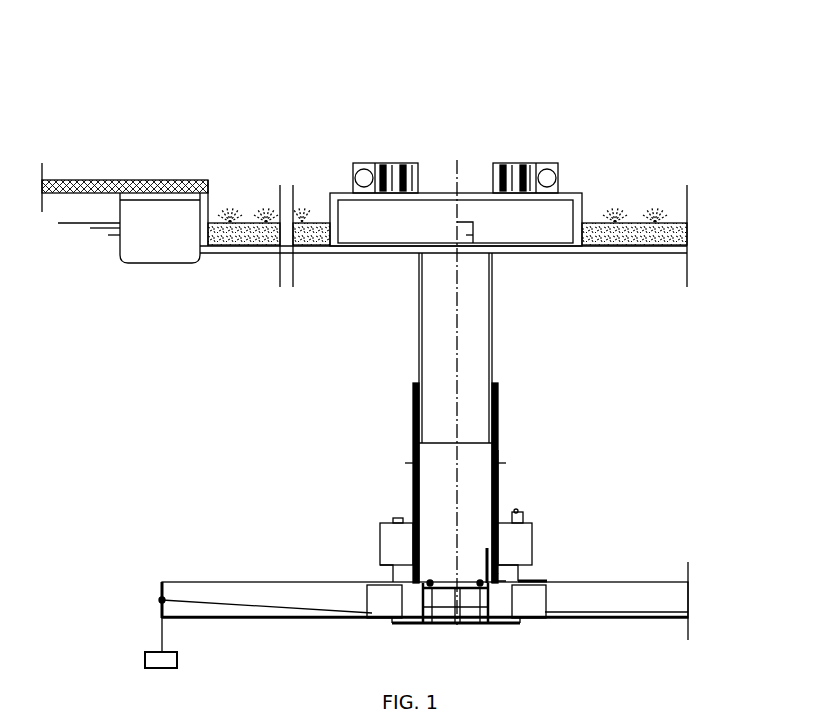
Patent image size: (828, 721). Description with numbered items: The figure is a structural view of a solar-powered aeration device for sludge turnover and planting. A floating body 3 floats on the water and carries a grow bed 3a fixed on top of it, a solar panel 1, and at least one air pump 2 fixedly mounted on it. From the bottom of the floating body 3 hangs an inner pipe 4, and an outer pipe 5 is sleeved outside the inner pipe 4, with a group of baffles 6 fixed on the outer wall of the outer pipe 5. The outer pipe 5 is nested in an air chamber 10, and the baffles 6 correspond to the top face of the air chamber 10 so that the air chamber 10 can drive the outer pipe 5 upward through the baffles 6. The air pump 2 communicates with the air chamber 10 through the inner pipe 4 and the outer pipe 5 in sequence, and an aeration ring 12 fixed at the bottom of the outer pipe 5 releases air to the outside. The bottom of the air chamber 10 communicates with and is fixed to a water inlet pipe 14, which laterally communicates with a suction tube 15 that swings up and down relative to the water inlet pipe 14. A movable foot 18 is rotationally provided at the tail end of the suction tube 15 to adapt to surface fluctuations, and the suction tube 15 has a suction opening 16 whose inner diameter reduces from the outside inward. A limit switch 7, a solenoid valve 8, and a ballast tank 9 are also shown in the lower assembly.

The solar panel 1 is at (163, 181).
The air pump 2 is at (558, 173).
The floating body 3 is at (583, 221).
The grow bed 3a is at (643, 222).
The inner pipe 4 is at (492, 346).
The outer pipe 5 is at (498, 397).
The baffle 6 is at (403, 520).
The limit switch 7 is at (498, 478).
The solenoid valve 8 is at (515, 512).
The ballast tank 9 is at (532, 530).
The air chamber 10 is at (533, 553).
The aeration ring 12 is at (518, 567).
The water inlet pipe 14 is at (547, 579).
The suction tube 15 is at (552, 581).
The suction opening 16 is at (402, 606).
The movable foot 18 is at (148, 660).